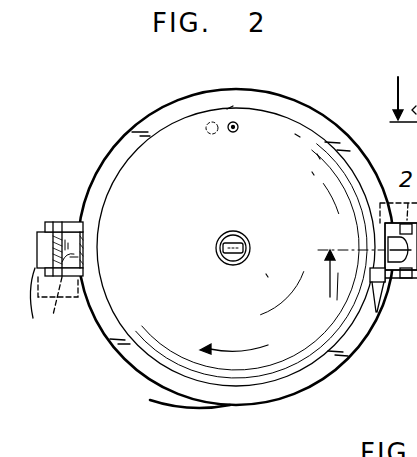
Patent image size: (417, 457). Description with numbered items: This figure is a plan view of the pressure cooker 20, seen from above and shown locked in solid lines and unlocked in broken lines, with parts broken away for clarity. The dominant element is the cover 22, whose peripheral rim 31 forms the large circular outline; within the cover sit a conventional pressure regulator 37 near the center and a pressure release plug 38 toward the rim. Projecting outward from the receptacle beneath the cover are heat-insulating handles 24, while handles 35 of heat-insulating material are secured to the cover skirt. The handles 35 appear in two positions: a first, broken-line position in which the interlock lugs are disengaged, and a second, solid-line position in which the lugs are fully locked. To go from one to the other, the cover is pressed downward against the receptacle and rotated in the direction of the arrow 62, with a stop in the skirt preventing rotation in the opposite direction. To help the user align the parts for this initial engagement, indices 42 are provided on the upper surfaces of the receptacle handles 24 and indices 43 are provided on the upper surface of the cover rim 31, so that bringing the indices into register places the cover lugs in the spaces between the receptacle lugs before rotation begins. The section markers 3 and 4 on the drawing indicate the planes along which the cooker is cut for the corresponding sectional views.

The pressure cooker 20 is at (138, 105).
The cover 22 is at (192, 390).
The handles 24 is at (50, 221).
The peripheral rim 31 is at (261, 403).
The handles 35 is at (54, 305).
The pressure regulator 37 is at (244, 240).
The pressure release plug 38 is at (238, 121).
The indices 42 is at (389, 239).
The indices 43 is at (377, 312).
The arrow 62 is at (234, 328).
The section line 3 is at (403, 84).
The section line 4 is at (351, 287).